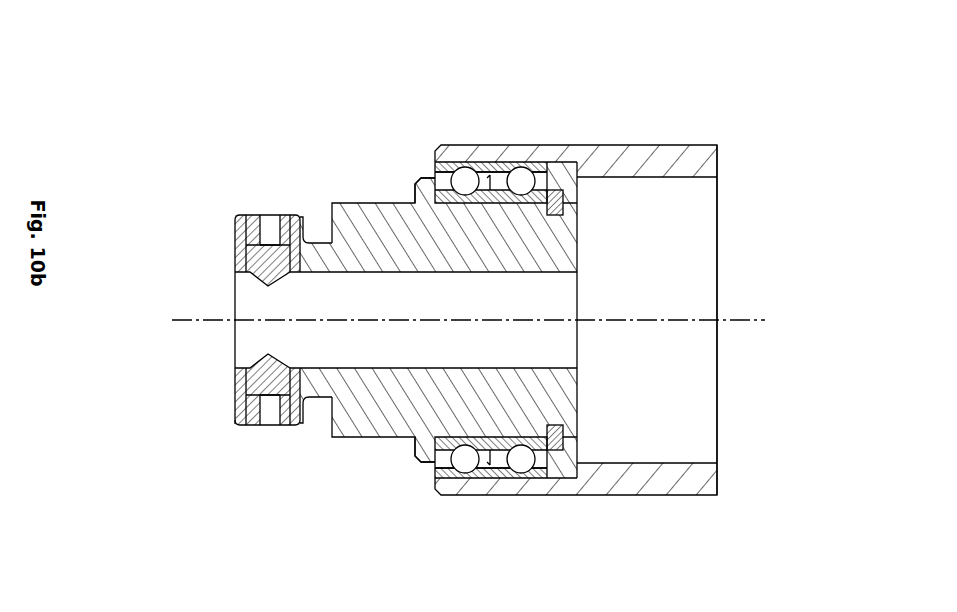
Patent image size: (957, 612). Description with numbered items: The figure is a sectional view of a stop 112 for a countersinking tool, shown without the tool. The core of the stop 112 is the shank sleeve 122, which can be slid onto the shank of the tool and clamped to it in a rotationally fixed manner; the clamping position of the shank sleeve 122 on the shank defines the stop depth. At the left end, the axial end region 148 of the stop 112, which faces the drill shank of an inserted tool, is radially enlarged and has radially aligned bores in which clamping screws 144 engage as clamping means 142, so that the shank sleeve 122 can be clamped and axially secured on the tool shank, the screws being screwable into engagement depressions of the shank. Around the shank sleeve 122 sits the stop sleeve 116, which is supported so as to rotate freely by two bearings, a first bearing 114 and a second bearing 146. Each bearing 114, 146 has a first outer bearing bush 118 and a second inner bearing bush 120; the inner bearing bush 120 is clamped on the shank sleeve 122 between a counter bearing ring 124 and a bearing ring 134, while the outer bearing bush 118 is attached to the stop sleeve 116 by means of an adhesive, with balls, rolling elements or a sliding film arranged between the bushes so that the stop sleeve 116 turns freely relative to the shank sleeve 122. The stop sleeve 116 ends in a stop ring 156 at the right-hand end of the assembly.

The stop 112 is at (796, 200).
The bearing 114 is at (461, 152).
The stop sleeve 116 is at (613, 135).
The first bearing bush 118 is at (480, 481).
The second bearing bush 120 is at (432, 456).
The shank sleeve 122 is at (318, 232).
The counter bearing ring 124 is at (419, 176).
The bearing ring 134 is at (556, 189).
The clamping means 142 is at (270, 410).
The clamping screws 144 is at (270, 320).
The second bearing 146 is at (515, 152).
The axial end region 148 is at (236, 214).
The stop ring 156 is at (727, 168).